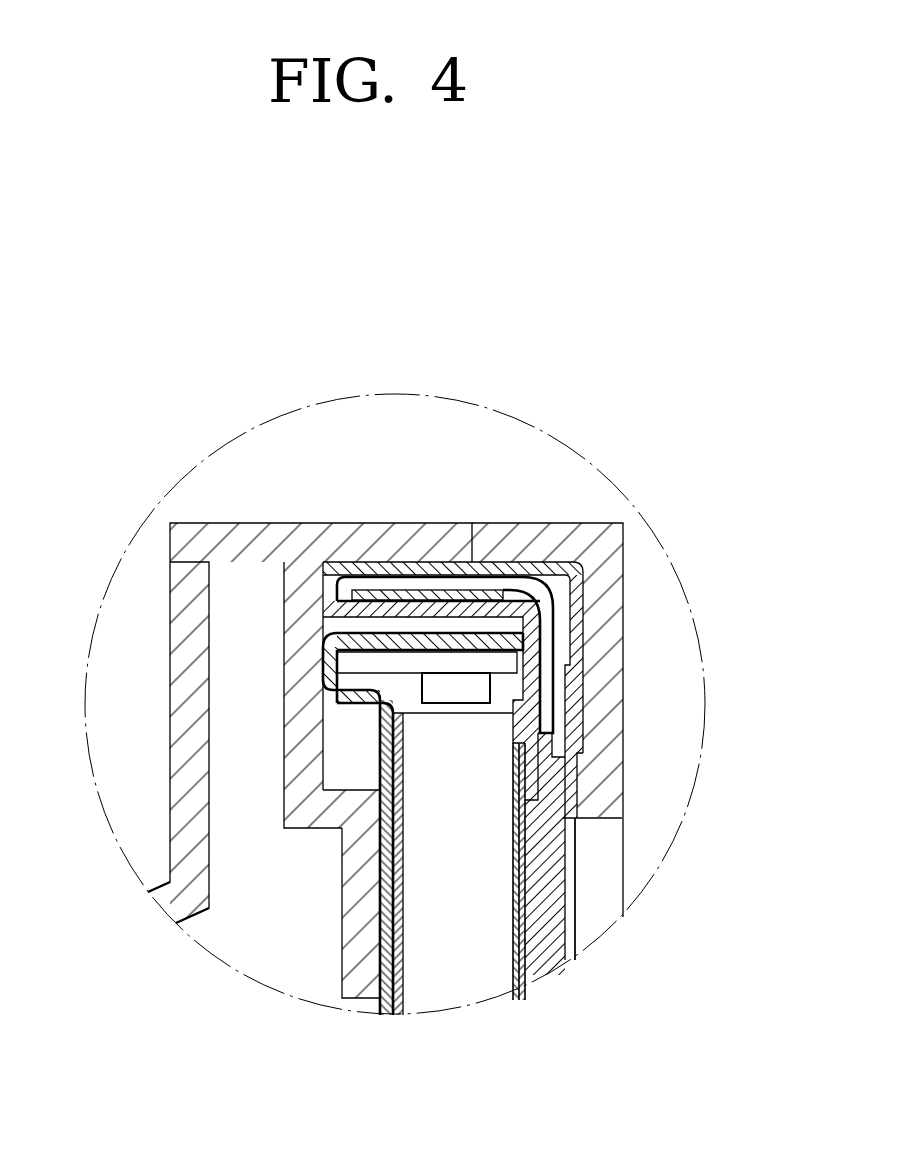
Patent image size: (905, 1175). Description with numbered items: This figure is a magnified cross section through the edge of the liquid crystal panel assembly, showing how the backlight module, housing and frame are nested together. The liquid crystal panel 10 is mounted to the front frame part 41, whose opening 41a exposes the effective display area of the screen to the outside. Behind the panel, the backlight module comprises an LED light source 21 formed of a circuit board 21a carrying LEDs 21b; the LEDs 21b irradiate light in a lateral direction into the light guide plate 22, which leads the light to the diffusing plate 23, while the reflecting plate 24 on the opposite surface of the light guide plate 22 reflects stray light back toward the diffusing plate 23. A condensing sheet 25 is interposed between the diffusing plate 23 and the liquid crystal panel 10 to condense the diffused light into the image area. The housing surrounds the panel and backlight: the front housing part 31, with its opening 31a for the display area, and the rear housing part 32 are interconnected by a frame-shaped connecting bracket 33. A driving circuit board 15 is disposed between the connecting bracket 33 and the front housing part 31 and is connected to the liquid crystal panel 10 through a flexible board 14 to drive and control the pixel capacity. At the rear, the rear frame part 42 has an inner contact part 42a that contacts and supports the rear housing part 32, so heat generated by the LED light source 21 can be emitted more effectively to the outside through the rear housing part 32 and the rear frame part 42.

The liquid crystal panel 10 is at (566, 905).
The flexible board 14 is at (572, 577).
The driving circuit board 15 is at (442, 590).
The LED light source 21 is at (588, 685).
The circuit board 21a is at (517, 665).
The LEDs 21b is at (485, 683).
The light guide plate 22 is at (452, 1000).
The diffusing plate 23 is at (520, 970).
The reflecting plate 24 is at (398, 1012).
The condensing sheet 25 is at (540, 985).
The front housing part 31 is at (540, 562).
The opening 31a is at (570, 848).
The rear housing part 32 is at (328, 678).
The connecting bracket 33 is at (350, 615).
The front frame part 41 is at (617, 600).
The opening 41a is at (605, 888).
The rear frame part 42 is at (180, 647).
The contact part 42a is at (353, 917).